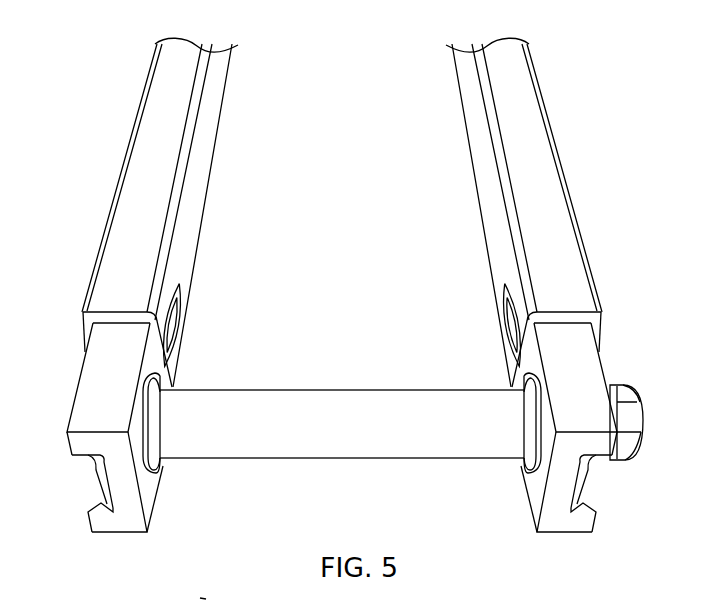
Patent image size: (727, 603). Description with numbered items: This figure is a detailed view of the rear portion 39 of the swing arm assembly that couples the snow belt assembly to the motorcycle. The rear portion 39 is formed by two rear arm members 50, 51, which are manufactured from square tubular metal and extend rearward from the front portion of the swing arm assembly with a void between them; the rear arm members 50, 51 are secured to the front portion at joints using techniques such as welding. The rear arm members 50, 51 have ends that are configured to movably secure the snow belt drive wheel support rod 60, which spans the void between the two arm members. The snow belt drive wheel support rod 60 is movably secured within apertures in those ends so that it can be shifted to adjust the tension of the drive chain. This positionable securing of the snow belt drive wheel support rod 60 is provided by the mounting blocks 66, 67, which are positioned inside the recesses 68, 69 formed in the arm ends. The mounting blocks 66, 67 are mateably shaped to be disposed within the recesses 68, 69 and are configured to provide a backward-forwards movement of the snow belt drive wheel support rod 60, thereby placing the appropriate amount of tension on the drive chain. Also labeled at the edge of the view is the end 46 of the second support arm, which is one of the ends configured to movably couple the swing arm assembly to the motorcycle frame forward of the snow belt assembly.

The rear portion 39 is at (600, 112).
The rear arm member 50 is at (512, 88).
The rear arm member 51 is at (193, 145).
The snow belt drive wheel support rod 60 is at (274, 408).
The mounting block 66 is at (602, 466).
The mounting block 67 is at (100, 487).
The recess 68 is at (588, 508).
The recess 69 is at (101, 510).
The end 46 is at (203, 599).